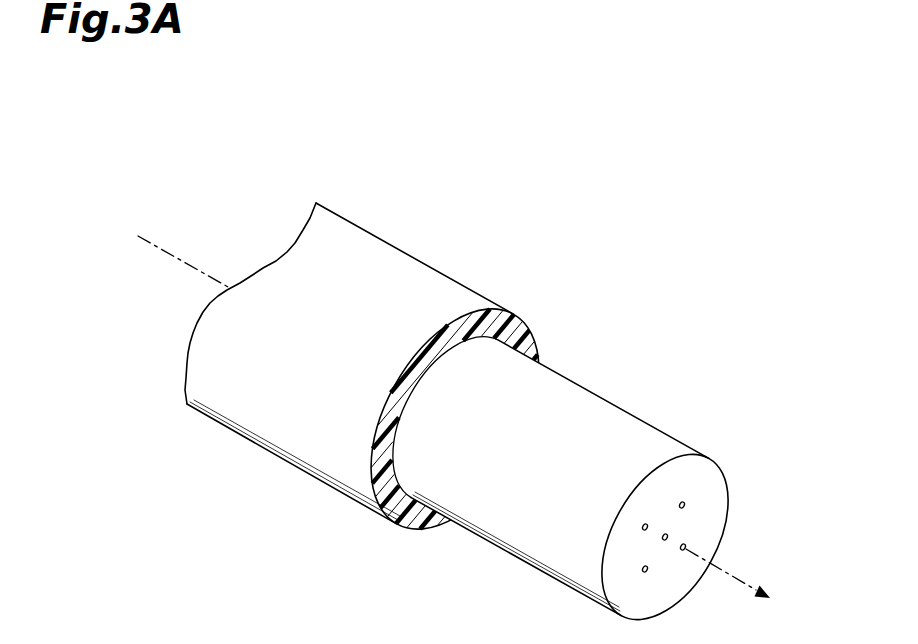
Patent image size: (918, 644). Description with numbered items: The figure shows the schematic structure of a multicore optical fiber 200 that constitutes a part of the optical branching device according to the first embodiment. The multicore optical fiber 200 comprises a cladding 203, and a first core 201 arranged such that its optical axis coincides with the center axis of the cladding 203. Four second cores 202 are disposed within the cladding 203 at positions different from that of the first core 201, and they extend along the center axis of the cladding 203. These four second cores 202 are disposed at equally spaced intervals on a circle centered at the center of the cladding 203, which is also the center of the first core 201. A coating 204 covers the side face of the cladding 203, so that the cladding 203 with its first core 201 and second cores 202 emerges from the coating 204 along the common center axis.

The multicore optical fiber 200 is at (479, 403).
The first core 201 is at (667, 541).
The second cores 202 is at (644, 531).
The cladding 203 is at (616, 492).
The coating 204 is at (532, 338).